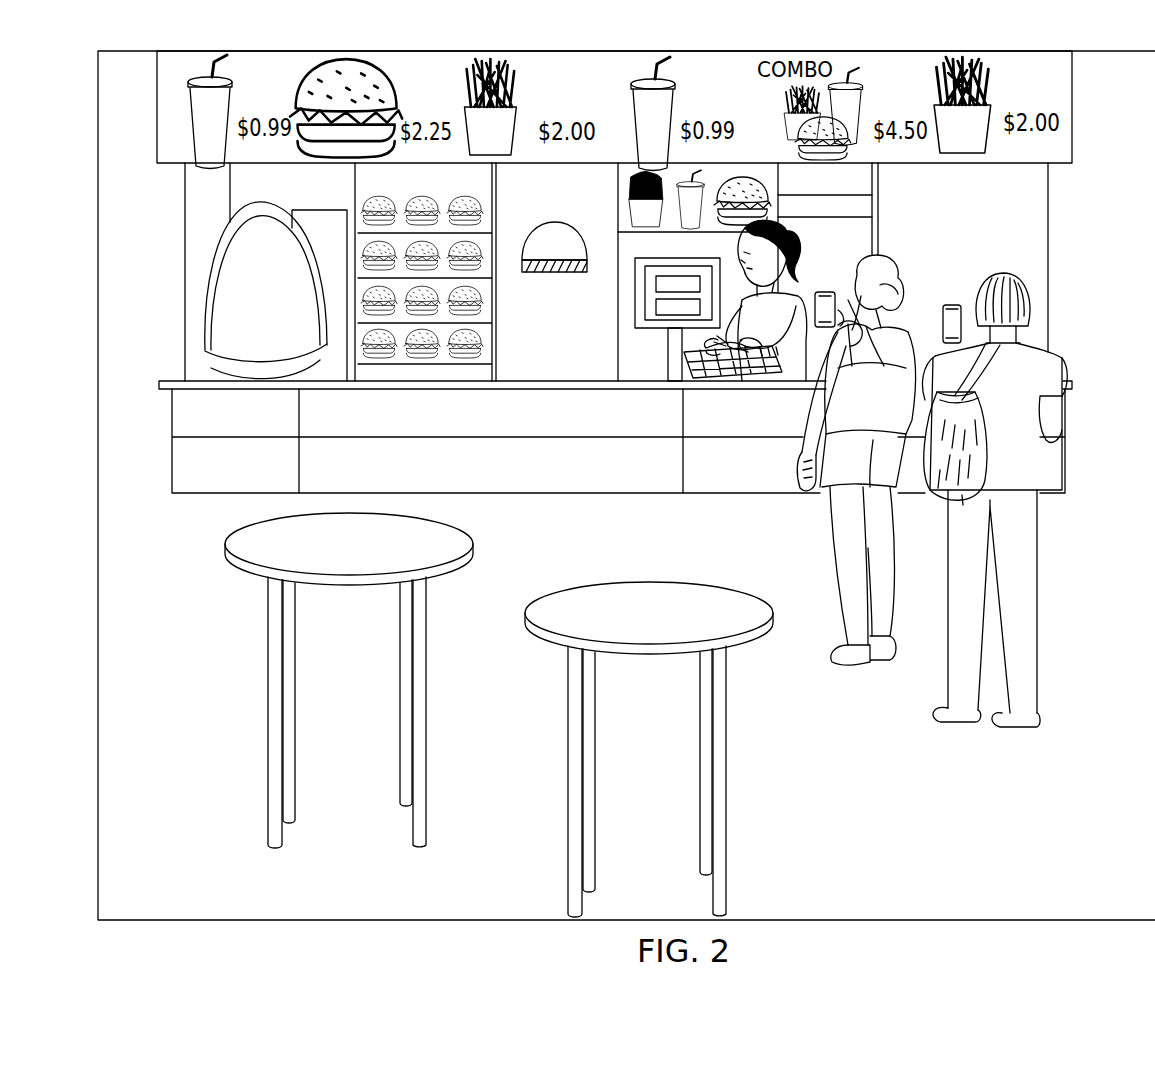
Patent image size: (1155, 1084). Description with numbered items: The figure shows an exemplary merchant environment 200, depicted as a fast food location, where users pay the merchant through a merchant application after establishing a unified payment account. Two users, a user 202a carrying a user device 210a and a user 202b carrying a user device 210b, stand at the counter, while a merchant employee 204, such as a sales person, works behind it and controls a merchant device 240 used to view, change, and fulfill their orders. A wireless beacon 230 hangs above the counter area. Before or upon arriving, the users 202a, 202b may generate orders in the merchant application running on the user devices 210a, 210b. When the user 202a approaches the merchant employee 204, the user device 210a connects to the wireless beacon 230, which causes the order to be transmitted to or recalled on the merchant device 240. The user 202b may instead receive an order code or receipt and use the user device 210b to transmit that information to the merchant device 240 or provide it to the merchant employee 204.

The environment 200 is at (83, 101).
The user 202a is at (812, 425).
The user 202b is at (1025, 455).
The merchant employee 204 is at (737, 248).
The user device 210a is at (826, 290).
The user device 210b is at (957, 302).
The wireless beacon 230 is at (558, 222).
The merchant device 240 is at (635, 310).